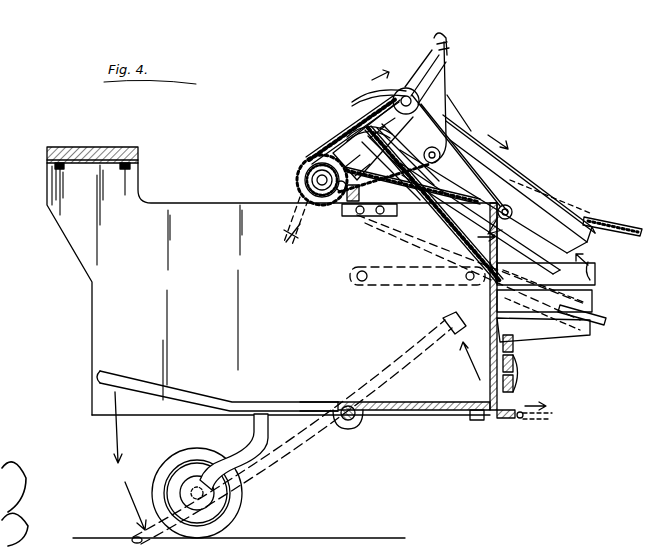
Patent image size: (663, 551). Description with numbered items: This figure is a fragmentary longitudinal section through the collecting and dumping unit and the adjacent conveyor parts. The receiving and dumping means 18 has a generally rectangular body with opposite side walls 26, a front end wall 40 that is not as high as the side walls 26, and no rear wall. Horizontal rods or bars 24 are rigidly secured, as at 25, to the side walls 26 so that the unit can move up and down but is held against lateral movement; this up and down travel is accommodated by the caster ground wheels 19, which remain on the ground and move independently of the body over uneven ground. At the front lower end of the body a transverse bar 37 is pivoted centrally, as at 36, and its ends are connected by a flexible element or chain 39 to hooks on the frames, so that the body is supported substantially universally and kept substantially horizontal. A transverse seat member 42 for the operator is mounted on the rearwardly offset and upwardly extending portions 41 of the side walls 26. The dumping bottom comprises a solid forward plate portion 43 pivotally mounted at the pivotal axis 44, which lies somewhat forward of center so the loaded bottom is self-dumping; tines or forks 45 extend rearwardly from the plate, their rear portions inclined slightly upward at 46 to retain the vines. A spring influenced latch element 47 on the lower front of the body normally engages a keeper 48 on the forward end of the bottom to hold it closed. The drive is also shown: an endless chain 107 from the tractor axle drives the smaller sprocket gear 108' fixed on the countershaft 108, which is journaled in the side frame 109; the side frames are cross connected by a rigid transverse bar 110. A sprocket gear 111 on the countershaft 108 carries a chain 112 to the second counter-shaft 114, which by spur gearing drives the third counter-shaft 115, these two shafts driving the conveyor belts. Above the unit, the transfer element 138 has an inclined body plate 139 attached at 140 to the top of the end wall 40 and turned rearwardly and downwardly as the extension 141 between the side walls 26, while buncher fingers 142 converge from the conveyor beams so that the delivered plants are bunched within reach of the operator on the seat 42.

The receiving and dumping means 18 is at (217, 195).
The ground wheels 19 is at (244, 504).
The horizontal rods or bars 24 is at (593, 273).
The rigid securement 25 is at (364, 286).
The side walls 26 is at (168, 210).
The pivot 36 is at (518, 375).
The transverse bar 37 is at (515, 400).
The flexible element or chain 39 is at (507, 335).
The end wall 40 is at (490, 318).
The rearwardly offset and upwardly extending portions 41 is at (50, 184).
The transverse seat member 42 is at (104, 150).
The forward plate portion 43 is at (430, 402).
The pivotal axis 44 is at (349, 429).
The tines or forks 45 is at (292, 401).
The inclined rear portions 46 is at (178, 382).
The latch element 47 is at (536, 420).
The keeper 48 is at (474, 420).
The endless chain 107 is at (620, 216).
The countershaft 108 is at (325, 185).
The smaller sprocket gear 108' is at (376, 150).
The side frame 109 is at (416, 66).
The rigid transverse bar 110 is at (437, 32).
The sprocket gear 111 is at (345, 145).
The chain 112 is at (345, 130).
The second counter-shaft 114 is at (367, 90).
The third counter-shaft 115 is at (352, 104).
The transfer element 138 is at (440, 222).
The inclined body plate 139 is at (450, 245).
The attachment 140 is at (492, 290).
The extension 141 is at (297, 228).
The buncher fingers 142 is at (370, 80).